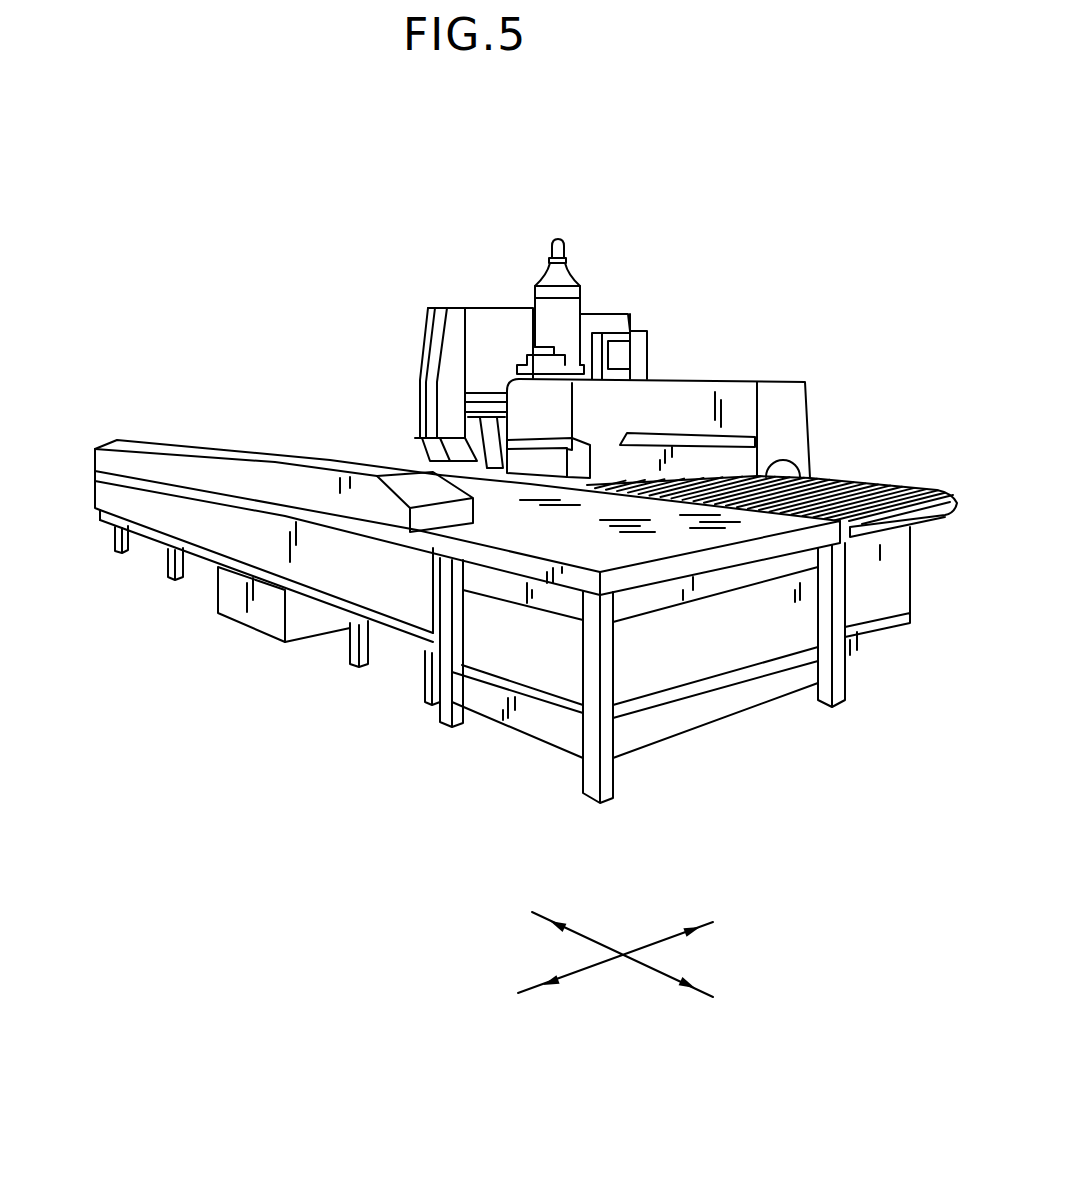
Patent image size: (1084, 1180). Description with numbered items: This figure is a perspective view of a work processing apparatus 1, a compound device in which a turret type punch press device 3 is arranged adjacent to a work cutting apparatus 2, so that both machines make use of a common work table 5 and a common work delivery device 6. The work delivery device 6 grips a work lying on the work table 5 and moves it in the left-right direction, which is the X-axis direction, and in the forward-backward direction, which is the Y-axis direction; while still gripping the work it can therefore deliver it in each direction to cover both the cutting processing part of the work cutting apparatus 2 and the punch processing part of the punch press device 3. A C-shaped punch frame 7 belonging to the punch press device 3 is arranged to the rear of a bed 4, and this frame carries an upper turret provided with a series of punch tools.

The work processing apparatus 1 is at (272, 320).
The work cutting apparatus 2 is at (726, 378).
The turret type punch press device 3 is at (513, 310).
The bed 4 is at (266, 622).
The work table 5 is at (500, 497).
The work delivery device 6 is at (229, 448).
The C-shaped punch frame 7 is at (485, 333).